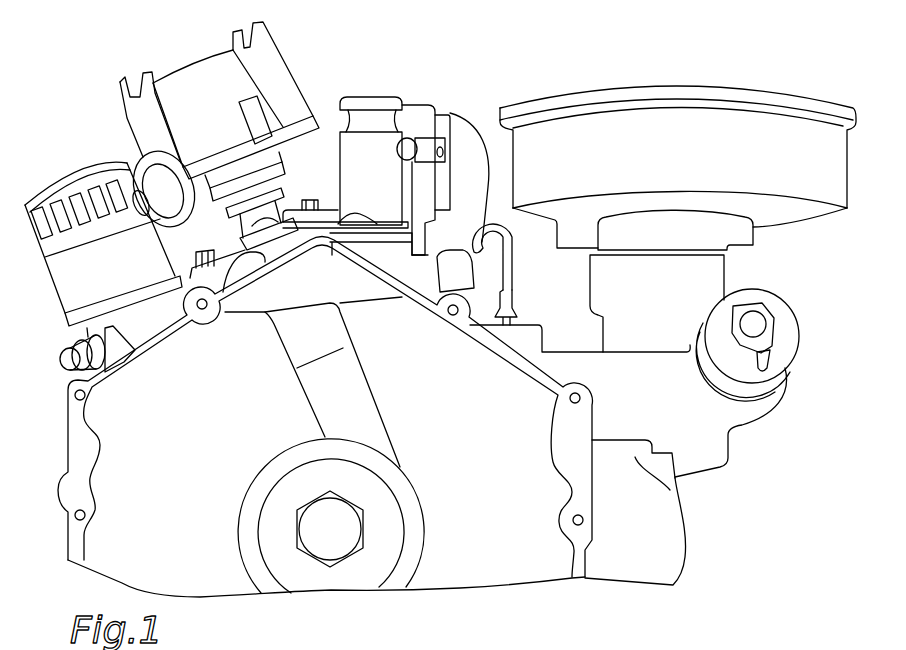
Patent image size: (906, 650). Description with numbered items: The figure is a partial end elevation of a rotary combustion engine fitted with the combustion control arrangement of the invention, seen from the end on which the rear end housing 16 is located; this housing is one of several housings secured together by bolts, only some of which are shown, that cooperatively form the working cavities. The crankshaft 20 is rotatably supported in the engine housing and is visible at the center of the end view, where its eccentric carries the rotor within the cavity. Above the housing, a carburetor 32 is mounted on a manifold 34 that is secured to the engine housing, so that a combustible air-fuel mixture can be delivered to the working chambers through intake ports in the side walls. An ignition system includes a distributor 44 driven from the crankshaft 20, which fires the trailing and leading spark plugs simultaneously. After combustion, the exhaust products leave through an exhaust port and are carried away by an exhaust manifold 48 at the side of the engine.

The distributor 44 is at (245, 78).
The carburetor 32 is at (707, 290).
The manifold 34 is at (747, 395).
The rear end housing 16 is at (577, 463).
The exhaust manifold 48 is at (662, 547).
The crankshaft 20 is at (320, 548).